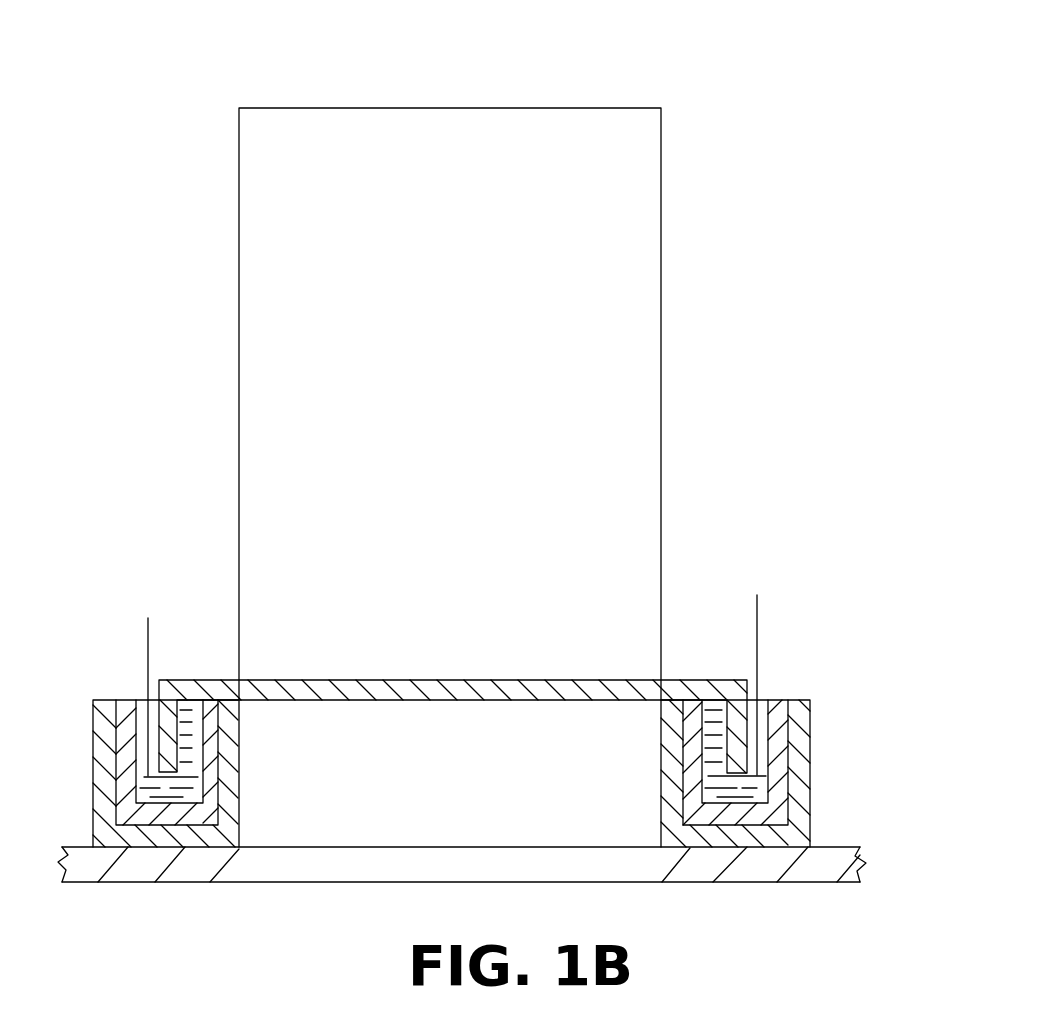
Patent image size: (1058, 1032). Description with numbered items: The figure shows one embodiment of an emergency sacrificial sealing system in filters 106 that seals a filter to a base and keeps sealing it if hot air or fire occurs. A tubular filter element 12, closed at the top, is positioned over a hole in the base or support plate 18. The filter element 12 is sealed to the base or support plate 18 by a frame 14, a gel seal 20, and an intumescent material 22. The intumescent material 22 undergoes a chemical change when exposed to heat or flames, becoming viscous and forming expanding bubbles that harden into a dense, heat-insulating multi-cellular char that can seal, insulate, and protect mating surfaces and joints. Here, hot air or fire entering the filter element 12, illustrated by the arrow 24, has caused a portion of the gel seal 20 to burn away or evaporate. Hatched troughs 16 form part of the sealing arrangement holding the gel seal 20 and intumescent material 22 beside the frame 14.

The emergency sacrificial sealing system in filters 106 is at (598, 81).
The tubular filter element 12 is at (494, 170).
The frame 14 is at (206, 680).
The outer trough 16 is at (810, 768).
The base or support plate 18 is at (193, 883).
The gel seal 20 is at (717, 781).
The intumescent material 22 is at (780, 703).
The arrow 24 is at (148, 652).